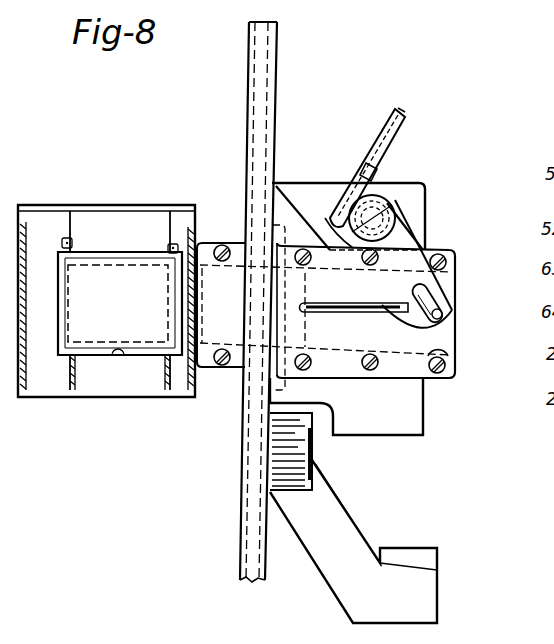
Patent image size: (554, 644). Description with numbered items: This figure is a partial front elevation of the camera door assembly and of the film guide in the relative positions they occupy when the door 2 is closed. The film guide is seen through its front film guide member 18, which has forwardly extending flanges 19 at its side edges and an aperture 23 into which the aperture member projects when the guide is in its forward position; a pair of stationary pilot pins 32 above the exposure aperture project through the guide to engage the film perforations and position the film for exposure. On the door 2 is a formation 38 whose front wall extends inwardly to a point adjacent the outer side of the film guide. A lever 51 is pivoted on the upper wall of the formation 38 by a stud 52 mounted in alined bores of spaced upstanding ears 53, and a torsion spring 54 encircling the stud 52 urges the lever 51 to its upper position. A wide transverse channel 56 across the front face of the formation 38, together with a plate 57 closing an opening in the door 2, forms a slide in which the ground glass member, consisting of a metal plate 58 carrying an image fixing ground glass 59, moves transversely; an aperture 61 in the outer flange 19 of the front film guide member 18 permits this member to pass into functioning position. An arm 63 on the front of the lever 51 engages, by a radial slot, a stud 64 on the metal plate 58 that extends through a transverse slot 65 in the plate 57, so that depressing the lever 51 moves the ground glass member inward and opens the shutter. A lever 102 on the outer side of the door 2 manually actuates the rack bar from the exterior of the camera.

The door 2 is at (268, 85).
The front film guide member 18 is at (93, 220).
The flanges 19 is at (27, 360).
The aperture 23 is at (115, 351).
The stationary pilot pins 32 is at (63, 238).
The formation 38 is at (415, 398).
The lever 51 is at (402, 108).
The stud 52 is at (378, 206).
The upstanding ears 53 is at (325, 218).
The torsion spring 54 is at (372, 168).
The channel 56 is at (453, 354).
The plate 57 is at (393, 377).
The metal plate 58 is at (452, 338).
The ground glass 59 is at (233, 280).
The aperture 61 is at (188, 335).
The arm 63 is at (433, 250).
The stud 64 is at (445, 313).
The slot 65 is at (452, 282).
The lever 102 is at (400, 552).